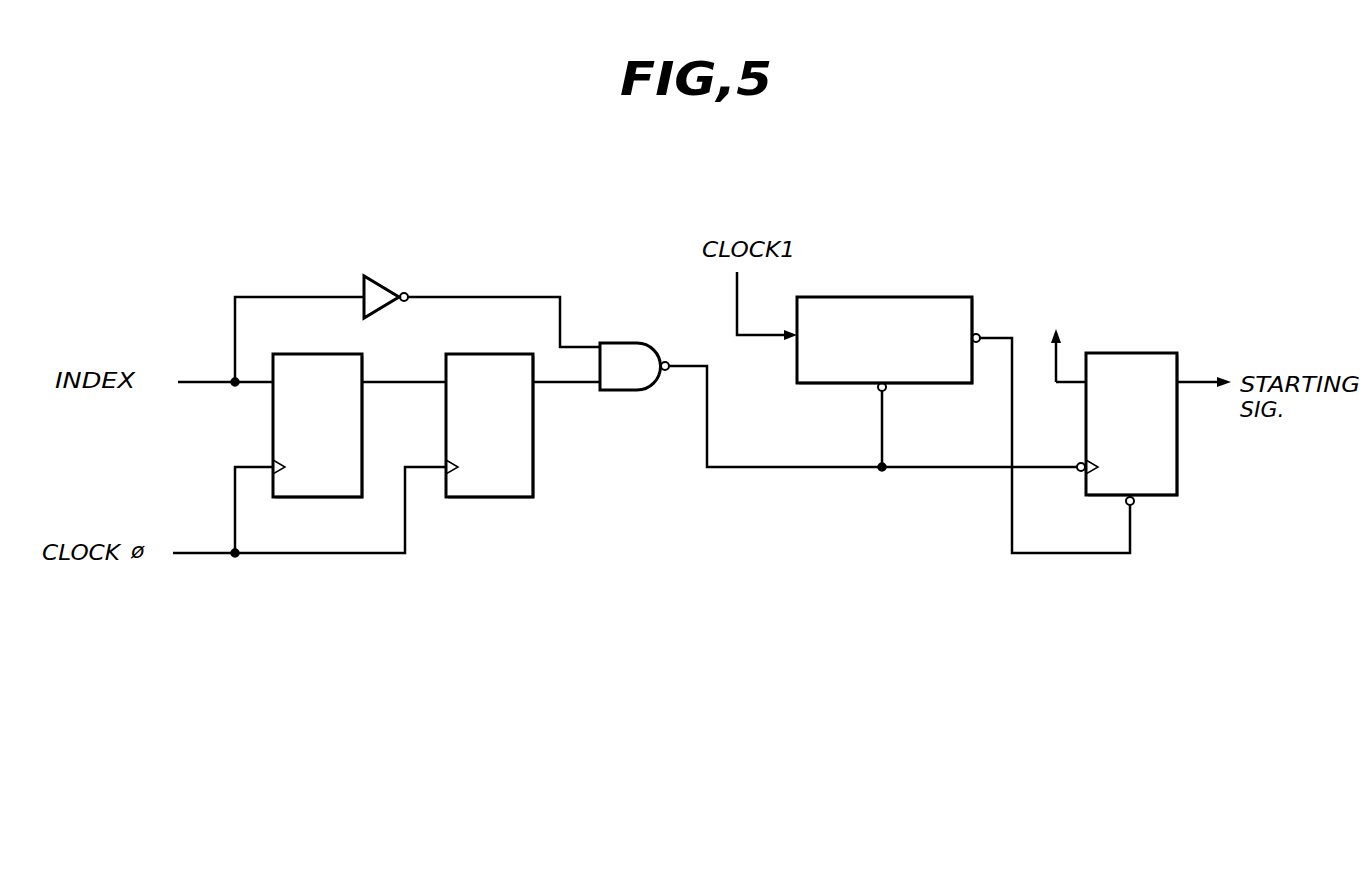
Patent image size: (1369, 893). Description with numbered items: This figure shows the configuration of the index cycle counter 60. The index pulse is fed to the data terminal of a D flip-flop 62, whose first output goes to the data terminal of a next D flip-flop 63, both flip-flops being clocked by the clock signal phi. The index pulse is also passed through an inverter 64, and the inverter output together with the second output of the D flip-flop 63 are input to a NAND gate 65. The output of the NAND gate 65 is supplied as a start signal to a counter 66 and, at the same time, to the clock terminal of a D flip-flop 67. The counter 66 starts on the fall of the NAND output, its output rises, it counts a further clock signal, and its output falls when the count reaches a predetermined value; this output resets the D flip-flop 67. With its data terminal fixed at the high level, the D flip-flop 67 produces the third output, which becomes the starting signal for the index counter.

The index cycle counter 60 is at (571, 264).
The D flip-flop 62 is at (308, 356).
The D flip-flop 63 is at (492, 356).
The inverter 64 is at (378, 282).
The NAND gate 65 is at (645, 342).
The counter 66 is at (905, 296).
The D flip-flop 67 is at (1150, 352).